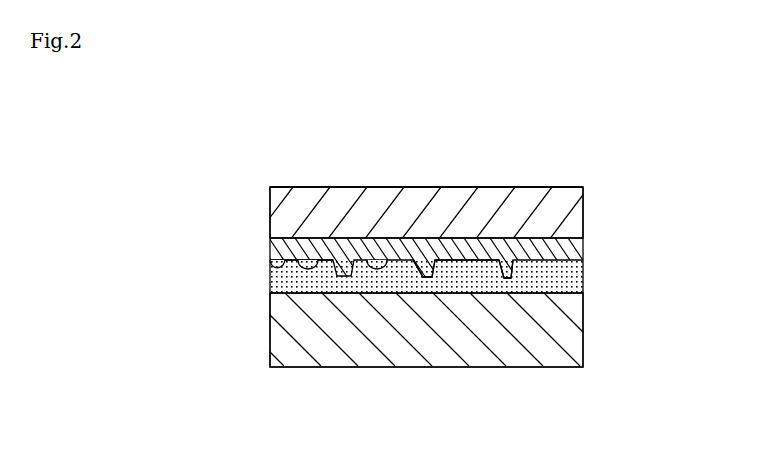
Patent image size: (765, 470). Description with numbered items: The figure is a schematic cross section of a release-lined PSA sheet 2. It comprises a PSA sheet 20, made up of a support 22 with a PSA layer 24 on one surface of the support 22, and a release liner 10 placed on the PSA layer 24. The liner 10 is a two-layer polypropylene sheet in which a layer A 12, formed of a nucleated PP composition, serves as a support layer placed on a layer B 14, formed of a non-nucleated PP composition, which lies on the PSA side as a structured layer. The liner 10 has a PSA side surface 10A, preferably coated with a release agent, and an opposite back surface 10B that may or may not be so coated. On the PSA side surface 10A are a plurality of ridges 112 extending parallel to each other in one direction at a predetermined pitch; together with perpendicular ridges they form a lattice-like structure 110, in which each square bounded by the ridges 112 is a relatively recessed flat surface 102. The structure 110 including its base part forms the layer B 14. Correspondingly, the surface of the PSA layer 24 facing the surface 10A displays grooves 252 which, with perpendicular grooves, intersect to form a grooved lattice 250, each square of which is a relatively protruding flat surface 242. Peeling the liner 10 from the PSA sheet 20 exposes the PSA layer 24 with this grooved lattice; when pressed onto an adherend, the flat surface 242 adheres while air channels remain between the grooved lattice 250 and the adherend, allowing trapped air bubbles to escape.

The release-lined PSA sheet 2 is at (637, 170).
The release liner 10 is at (438, 277).
The PSA side surface 10A is at (272, 261).
The back surface 10B is at (305, 187).
The layer A 12 is at (580, 208).
The layer B 14 is at (580, 250).
The PSA sheet 20 is at (460, 343).
The support 22 is at (658, 275).
The PSA layer 24 is at (580, 285).
The recessed flat surface 102 is at (323, 293).
The lattice-like structure 110 is at (424, 277).
The ridges 112 is at (423, 277).
The protruding flat surface 242 is at (466, 261).
The grooved lattice 250 is at (509, 262).
The grooves 252 is at (512, 278).